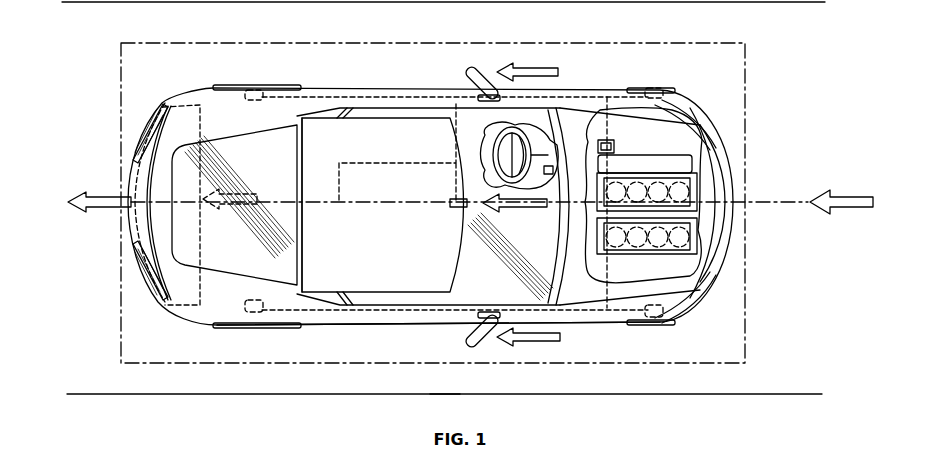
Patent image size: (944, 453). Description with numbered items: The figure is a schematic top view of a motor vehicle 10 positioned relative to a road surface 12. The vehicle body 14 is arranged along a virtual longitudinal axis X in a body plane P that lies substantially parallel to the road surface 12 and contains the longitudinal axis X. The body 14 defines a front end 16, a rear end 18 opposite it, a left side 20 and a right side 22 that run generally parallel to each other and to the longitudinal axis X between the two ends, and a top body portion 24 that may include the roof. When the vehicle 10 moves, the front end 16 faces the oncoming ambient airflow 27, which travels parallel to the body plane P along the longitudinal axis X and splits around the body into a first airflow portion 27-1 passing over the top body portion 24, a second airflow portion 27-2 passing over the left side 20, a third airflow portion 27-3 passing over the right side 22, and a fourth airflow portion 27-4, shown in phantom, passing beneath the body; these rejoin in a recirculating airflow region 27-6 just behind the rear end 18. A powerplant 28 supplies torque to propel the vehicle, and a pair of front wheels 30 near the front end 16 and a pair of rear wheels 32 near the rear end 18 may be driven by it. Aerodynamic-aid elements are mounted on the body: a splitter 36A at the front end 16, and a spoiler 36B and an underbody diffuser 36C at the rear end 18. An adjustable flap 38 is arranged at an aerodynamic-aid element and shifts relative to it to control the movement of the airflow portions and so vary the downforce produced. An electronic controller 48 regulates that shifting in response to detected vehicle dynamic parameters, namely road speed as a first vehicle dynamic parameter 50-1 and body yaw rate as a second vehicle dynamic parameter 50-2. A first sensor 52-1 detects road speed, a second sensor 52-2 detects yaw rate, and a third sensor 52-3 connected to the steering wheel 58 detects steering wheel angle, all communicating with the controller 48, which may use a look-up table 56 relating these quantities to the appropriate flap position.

The motor vehicle 10 is at (724, 322).
The road surface 12 is at (451, 387).
The vehicle body 14 is at (390, 145).
The front end 16 is at (733, 160).
The rear end 18 is at (135, 182).
The left side 20 is at (448, 88).
The right side 22 is at (437, 317).
The top body portion 24 is at (380, 209).
The ambient airflow 27 is at (848, 198).
The first airflow portion 27-1 is at (527, 211).
The second airflow portion 27-2 is at (538, 65).
The third airflow portion 27-3 is at (541, 343).
The fourth airflow portion 27-4 is at (220, 212).
The recirculating airflow region 27-6 is at (107, 208).
The powerplant 28 is at (705, 150).
The front wheels 30 is at (662, 88).
The rear wheels 32 is at (227, 83).
The splitter 36A is at (730, 240).
The spoiler 36B is at (140, 265).
The underbody diffuser 36C is at (190, 307).
The adjustable flap 38 is at (140, 137).
The electronic controller 48 is at (600, 140).
The first vehicle dynamic parameter 50-1 is at (613, 130).
The second vehicle dynamic parameter 50-2 is at (686, 171).
The first sensor 52-1 is at (260, 90).
The second sensor 52-2 is at (339, 200).
The third sensor 52-3 is at (548, 170).
The look-up table 56 is at (614, 140).
The steering wheel 58 is at (493, 163).
The body plane P is at (237, 364).
The longitudinal axis X is at (785, 205).